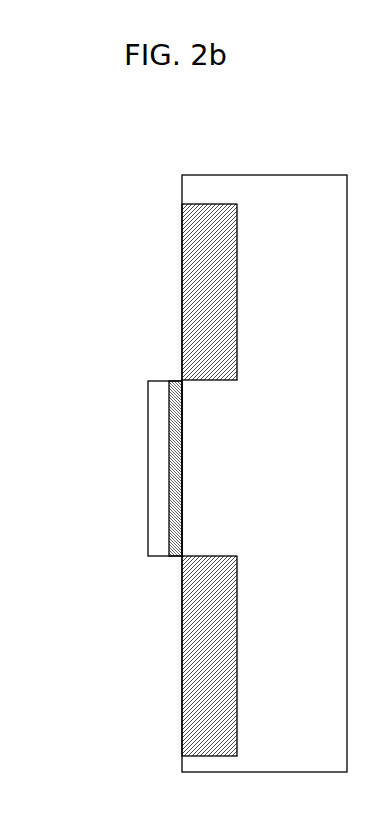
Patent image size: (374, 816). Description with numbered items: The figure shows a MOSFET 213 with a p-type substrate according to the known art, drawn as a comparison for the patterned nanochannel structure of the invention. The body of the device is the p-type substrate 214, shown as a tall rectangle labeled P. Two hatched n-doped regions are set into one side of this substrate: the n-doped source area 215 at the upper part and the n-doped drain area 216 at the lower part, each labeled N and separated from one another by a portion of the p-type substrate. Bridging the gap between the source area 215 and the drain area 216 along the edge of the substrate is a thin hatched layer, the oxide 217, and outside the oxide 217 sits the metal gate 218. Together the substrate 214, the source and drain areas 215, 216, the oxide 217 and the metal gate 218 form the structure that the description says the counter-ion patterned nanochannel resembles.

The MOSFET 213 is at (245, 174).
The p-type substrate 214 is at (264, 473).
The n-doped source area 215 is at (200, 258).
The n-doped drain area 216 is at (200, 718).
The oxide 217 is at (180, 380).
The metal gate 218 is at (146, 474).